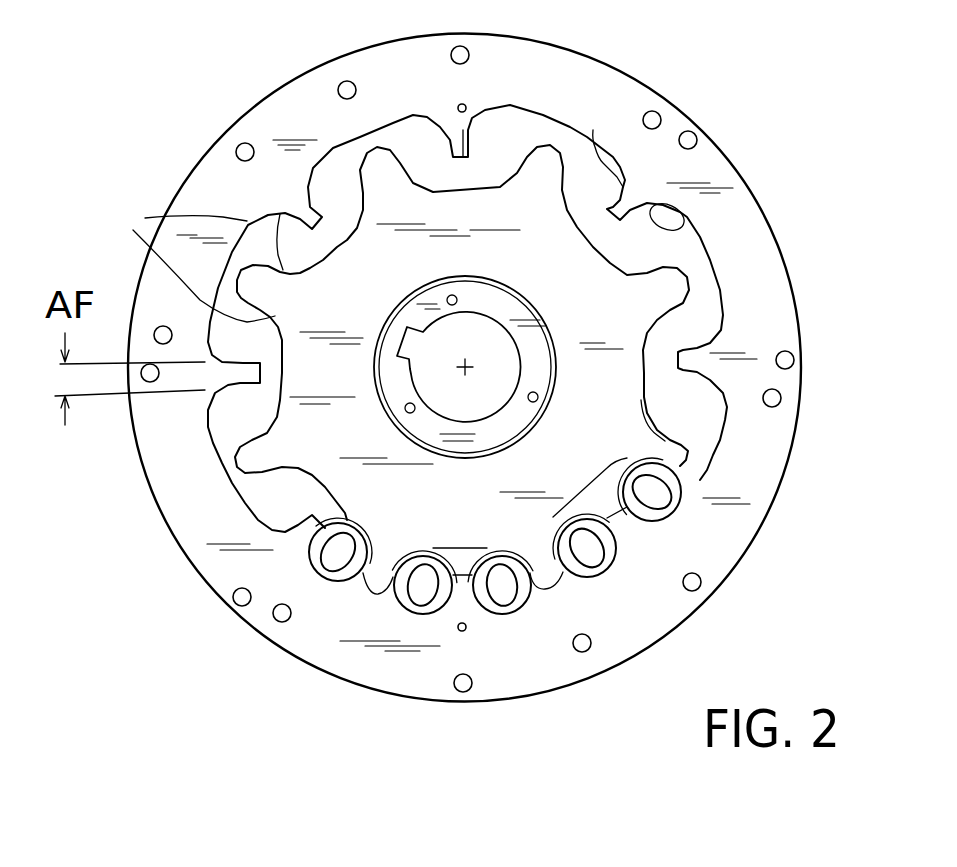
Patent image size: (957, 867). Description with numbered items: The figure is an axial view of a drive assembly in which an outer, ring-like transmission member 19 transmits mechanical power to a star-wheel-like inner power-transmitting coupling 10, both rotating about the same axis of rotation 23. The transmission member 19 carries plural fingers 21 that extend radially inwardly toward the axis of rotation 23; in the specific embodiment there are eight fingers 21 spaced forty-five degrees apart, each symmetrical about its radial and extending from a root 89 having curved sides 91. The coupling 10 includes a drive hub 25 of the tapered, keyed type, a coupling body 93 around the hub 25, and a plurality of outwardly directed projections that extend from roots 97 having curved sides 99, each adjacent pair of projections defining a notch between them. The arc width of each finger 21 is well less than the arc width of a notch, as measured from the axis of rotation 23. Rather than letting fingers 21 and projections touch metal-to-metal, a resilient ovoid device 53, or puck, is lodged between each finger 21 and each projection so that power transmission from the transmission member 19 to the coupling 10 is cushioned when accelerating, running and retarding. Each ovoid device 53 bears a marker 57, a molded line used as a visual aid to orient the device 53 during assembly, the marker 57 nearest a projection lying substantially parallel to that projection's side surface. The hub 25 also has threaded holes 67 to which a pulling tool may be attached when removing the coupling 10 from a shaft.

The power-transmitting coupling 10 is at (627, 368).
The transmission member 19 is at (657, 613).
The finger 21 is at (312, 213).
The axis of rotation 23 is at (470, 363).
The drive hub 25 is at (397, 389).
The resilient ovoid device 53 is at (332, 580).
The marker 57 is at (517, 587).
The threaded hole 67 is at (413, 413).
The root 89 is at (643, 188).
The curved side 91 is at (593, 130).
The coupling body 93 is at (587, 418).
The root 97 is at (275, 293).
The curved side 99 is at (182, 262).